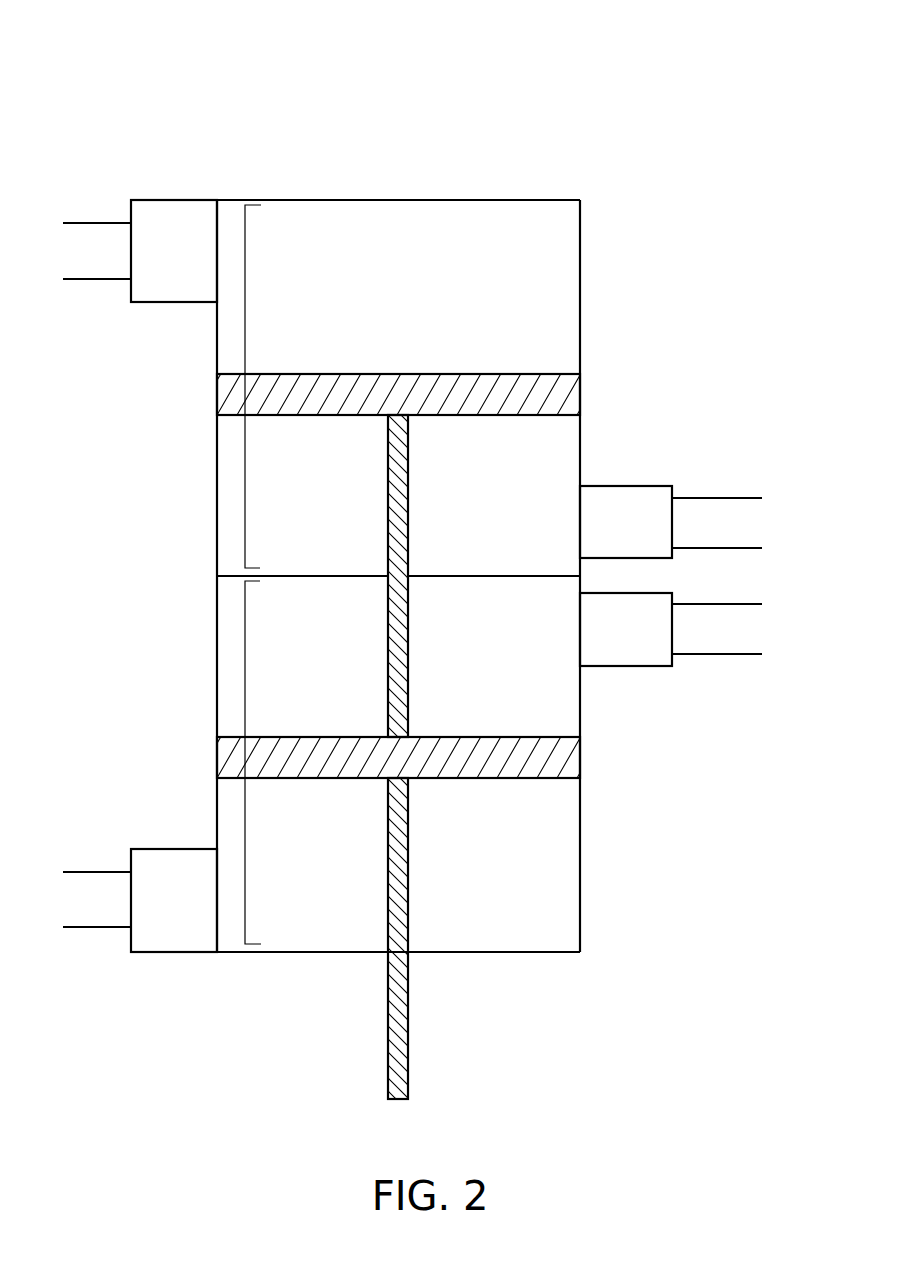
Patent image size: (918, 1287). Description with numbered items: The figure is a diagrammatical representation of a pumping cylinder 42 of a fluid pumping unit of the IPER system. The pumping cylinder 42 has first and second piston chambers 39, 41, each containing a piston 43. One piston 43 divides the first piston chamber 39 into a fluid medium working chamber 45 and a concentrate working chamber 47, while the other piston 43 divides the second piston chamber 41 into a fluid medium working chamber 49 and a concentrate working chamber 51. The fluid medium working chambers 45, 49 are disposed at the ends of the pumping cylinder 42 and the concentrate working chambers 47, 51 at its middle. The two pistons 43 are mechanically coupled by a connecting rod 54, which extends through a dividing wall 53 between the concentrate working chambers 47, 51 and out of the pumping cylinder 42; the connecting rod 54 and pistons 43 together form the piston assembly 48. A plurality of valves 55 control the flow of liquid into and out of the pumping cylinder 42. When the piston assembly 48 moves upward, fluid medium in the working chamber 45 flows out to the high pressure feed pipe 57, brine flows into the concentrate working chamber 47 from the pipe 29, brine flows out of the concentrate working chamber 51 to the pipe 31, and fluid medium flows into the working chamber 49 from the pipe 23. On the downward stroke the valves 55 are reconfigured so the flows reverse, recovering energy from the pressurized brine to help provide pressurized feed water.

The pumping cylinder 42 is at (717, 53).
The first piston chamber 39 is at (245, 490).
The second piston chamber 41 is at (245, 672).
The piston 43 is at (522, 373).
The fluid medium working chamber 45 is at (458, 242).
The concentrate working chamber 47 is at (286, 494).
The piston assembly 48 is at (423, 365).
The fluid medium working chamber 49 is at (294, 874).
The concentrate working chamber 51 is at (284, 644).
The dividing wall 53 is at (507, 575).
The connecting rod 54 is at (408, 503).
The valve 55 is at (175, 200).
The pipe 23 is at (80, 223).
The high pressure feed pipe 57 is at (98, 279).
The pipe 29 is at (740, 498).
The pipe 31 is at (740, 548).